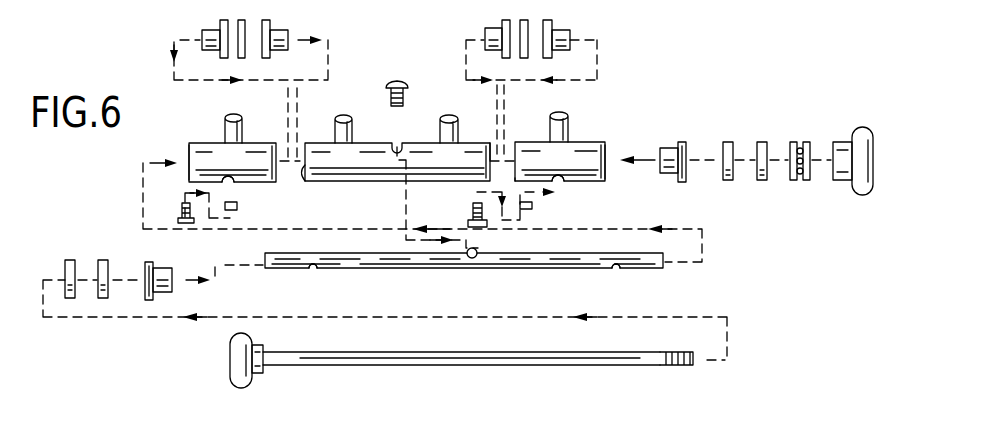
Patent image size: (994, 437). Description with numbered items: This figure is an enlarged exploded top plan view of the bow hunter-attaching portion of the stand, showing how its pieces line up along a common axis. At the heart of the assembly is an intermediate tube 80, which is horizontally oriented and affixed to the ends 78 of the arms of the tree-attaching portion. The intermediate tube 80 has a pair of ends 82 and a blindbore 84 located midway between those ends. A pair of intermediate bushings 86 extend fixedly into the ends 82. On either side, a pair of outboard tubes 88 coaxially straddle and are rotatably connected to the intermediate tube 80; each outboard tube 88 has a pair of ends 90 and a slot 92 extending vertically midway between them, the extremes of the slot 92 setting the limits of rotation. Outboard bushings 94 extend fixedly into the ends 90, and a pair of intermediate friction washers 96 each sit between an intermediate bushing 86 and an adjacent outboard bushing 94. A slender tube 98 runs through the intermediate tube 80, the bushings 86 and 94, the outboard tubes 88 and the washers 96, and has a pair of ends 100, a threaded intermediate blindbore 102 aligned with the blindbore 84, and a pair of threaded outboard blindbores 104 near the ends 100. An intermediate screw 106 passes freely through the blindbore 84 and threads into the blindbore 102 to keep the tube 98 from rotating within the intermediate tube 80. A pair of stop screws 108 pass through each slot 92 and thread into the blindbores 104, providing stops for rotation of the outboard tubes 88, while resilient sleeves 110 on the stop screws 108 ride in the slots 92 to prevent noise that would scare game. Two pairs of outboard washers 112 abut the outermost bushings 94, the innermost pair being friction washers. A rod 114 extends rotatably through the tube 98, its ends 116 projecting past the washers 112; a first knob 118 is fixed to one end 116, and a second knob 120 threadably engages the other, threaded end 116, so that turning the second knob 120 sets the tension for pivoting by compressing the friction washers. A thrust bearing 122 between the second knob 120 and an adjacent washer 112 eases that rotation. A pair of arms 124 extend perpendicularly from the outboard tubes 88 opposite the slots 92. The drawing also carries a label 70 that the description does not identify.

The block assembly 70 is at (515, 178).
The ends 78 is at (336, 129).
The intermediate tube 80 is at (382, 140).
The ends 82 is at (305, 172).
The blindbore 84 is at (398, 124).
The intermediate bushings 86 is at (281, 31).
The outboard tubes 88 is at (216, 140).
The ends 90 is at (286, 146).
The slot 92 is at (232, 180).
The outboard bushings 94 is at (202, 36).
The intermediate friction washers 96 is at (241, 20).
The tube 98 is at (405, 268).
The ends 100 is at (268, 258).
The threaded intermediate blindbore 102 is at (472, 257).
The threaded outboard blindbores 104 is at (313, 272).
The intermediate screw 106 is at (398, 81).
The stop screws 108 is at (178, 221).
The resilient sleeves 110 is at (238, 206).
The outboard washers 112 is at (104, 259).
The rod 114 is at (417, 366).
The ends 116 is at (263, 372).
The first knob 118 is at (232, 360).
The second knob 120 is at (842, 181).
The thrust bearing 122 is at (793, 142).
The arms 124 is at (229, 116).